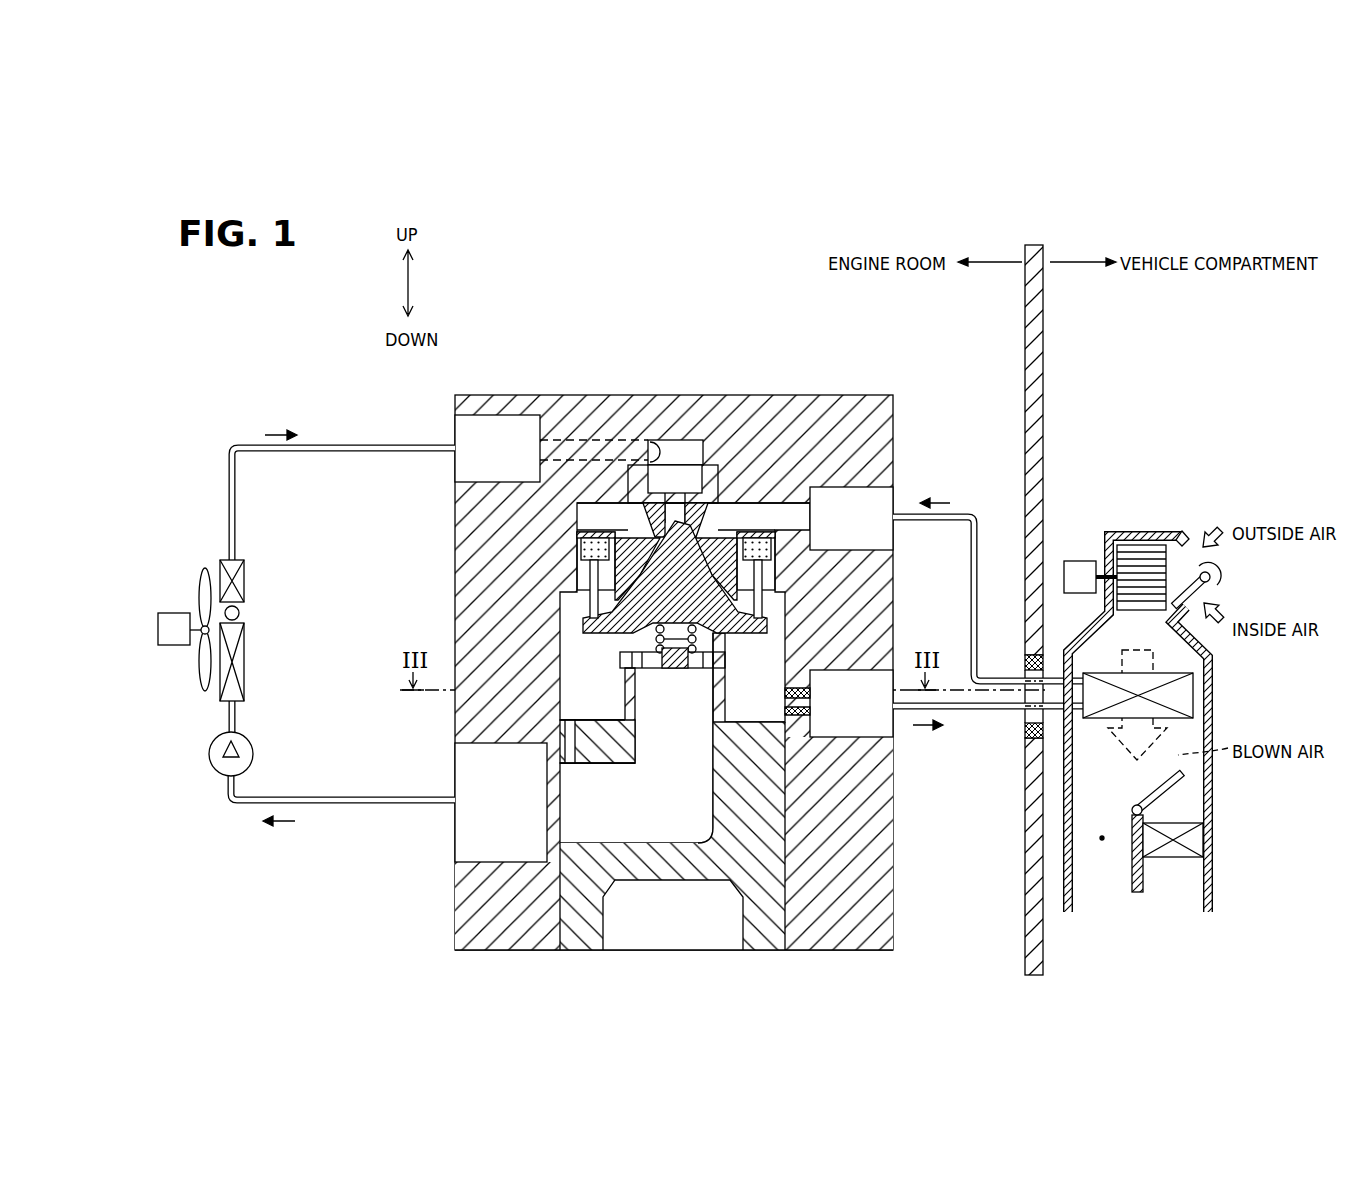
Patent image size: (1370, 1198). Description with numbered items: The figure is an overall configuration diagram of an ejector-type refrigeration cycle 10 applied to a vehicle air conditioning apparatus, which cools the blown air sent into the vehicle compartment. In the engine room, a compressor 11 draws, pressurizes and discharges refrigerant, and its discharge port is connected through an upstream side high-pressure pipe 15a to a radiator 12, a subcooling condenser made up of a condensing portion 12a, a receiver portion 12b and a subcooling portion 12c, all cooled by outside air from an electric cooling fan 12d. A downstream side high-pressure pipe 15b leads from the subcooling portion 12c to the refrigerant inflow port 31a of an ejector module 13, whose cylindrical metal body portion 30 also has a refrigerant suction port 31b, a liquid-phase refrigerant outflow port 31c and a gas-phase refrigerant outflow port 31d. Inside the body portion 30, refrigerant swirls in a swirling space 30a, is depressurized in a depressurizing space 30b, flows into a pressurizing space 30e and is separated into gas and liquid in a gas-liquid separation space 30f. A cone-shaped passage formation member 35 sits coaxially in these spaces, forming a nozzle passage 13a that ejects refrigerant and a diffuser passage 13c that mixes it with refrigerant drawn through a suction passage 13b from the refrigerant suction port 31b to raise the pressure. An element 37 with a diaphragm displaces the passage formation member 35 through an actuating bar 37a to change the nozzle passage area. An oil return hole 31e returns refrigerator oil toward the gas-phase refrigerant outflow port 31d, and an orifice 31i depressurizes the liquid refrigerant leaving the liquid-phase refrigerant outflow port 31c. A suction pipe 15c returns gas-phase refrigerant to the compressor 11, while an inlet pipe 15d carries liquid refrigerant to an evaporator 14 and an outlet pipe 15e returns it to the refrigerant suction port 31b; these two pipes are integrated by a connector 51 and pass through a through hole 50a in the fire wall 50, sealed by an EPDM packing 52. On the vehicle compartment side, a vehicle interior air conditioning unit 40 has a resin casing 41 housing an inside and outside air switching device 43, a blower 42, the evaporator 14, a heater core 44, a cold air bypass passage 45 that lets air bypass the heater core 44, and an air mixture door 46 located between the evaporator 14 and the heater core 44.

The ejector-type refrigeration cycle 10 is at (911, 373).
The compressor 11 is at (212, 770).
The radiator 12 is at (218, 560).
The condensing portion 12a is at (244, 655).
The receiver portion 12b is at (239, 612).
The subcooling portion 12c is at (244, 578).
The cooling fan 12d is at (200, 605).
The ejector module 13 is at (514, 390).
The nozzle passage 13a is at (705, 535).
The suction passage 13b is at (717, 535).
The diffuser passage 13c is at (740, 578).
The evaporator 14 is at (1185, 692).
The upstream side high-pressure pipe 15a is at (222, 716).
The downstream side high-pressure pipe 15b is at (232, 446).
The suction pipe 15c is at (330, 804).
The inlet pipe 15d is at (968, 715).
The outlet pipe 15e is at (974, 525).
The body portion 30 is at (572, 400).
The swirling space 30a is at (675, 440).
The depressurizing space 30b is at (577, 515).
The pressurizing space 30e is at (583, 625).
The gas-liquid separation space 30f is at (770, 745).
The refrigerant inflow port 31a is at (455, 430).
The refrigerant suction port 31b is at (893, 487).
The liquid-phase refrigerant outflow port 31c is at (893, 748).
The gas-phase refrigerant outflow port 31d is at (455, 860).
The oil return hole 31e is at (560, 737).
The orifice 31i is at (880, 737).
The passage formation member 35 is at (700, 640).
The element 37 is at (580, 547).
The actuating bar 37a is at (592, 605).
The vehicle interior air conditioning unit 40 is at (1230, 671).
The casing 41 is at (1148, 532).
The blower 42 is at (1080, 561).
The inside and outside air switching device 43 is at (1212, 571).
The heater core 44 is at (1190, 838).
The cold air bypass passage 45 is at (1102, 838).
The air mixture door 46 is at (1175, 785).
The fire wall 50 is at (1033, 254).
The through hole 50a is at (1028, 656).
The connector 51 is at (1027, 716).
The packing 52 is at (1027, 738).